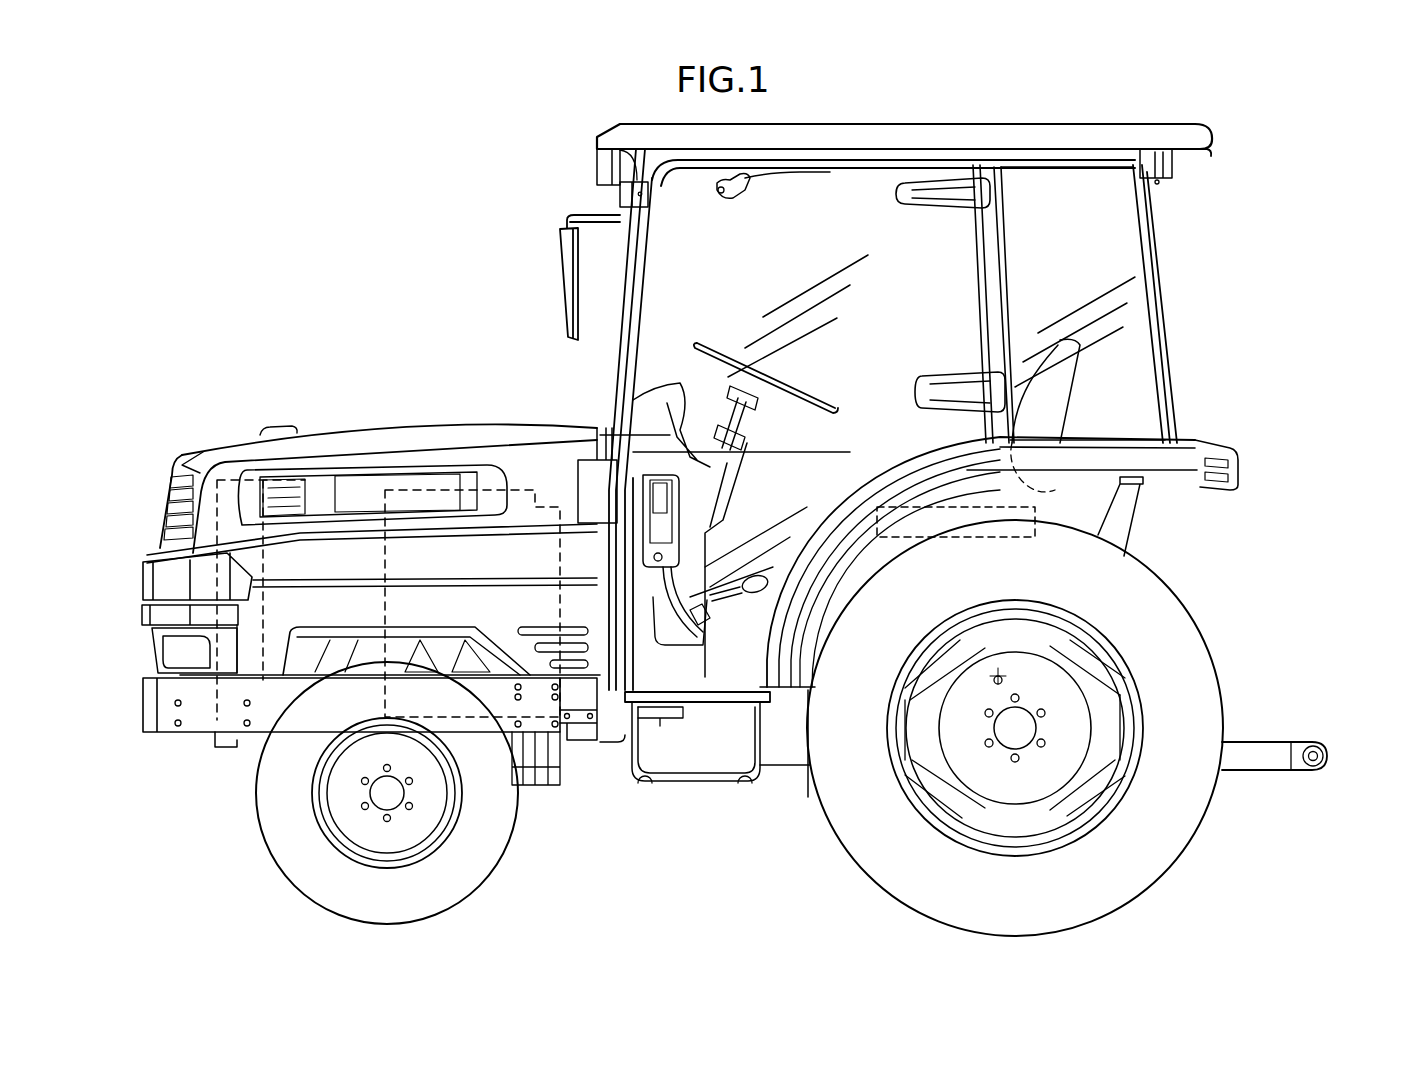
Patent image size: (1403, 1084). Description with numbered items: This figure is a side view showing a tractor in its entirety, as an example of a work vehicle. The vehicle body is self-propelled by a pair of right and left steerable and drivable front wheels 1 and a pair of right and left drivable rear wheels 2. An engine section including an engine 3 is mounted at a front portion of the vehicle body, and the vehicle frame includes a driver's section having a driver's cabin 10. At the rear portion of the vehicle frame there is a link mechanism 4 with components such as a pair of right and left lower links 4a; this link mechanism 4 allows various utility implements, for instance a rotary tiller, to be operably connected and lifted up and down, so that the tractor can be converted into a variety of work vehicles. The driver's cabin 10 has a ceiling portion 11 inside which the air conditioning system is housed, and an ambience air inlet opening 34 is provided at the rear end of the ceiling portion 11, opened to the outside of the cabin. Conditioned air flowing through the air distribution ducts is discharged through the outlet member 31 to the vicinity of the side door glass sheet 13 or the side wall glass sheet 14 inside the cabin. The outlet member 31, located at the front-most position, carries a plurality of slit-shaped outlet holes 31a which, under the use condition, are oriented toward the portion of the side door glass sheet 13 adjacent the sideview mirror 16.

The front wheels 1 is at (278, 818).
The rear wheels 2 is at (857, 806).
The engine 3 is at (507, 500).
The link mechanism 4 is at (1257, 788).
The lower links 4a is at (1254, 750).
The driver's cabin 10 is at (1169, 231).
The ceiling portion 11 is at (832, 137).
The side door glass sheet 13 is at (662, 332).
The side wall glass sheet 14 is at (1127, 381).
The sideview mirror 16 is at (557, 252).
The outlet member 31 is at (742, 190).
The outlet holes 31a is at (716, 198).
The ambience air inlet opening 34 is at (1210, 152).